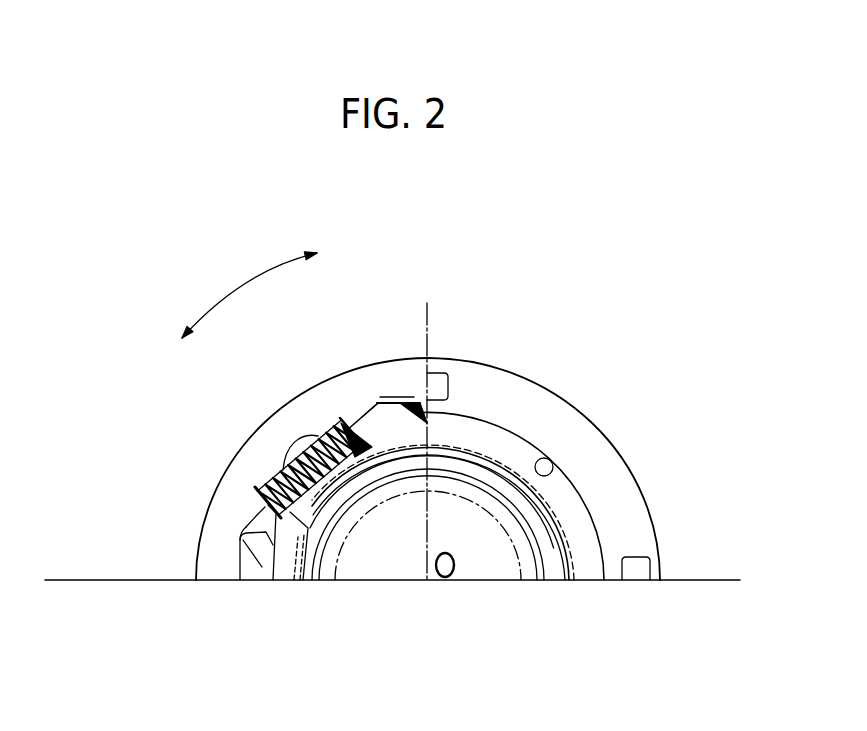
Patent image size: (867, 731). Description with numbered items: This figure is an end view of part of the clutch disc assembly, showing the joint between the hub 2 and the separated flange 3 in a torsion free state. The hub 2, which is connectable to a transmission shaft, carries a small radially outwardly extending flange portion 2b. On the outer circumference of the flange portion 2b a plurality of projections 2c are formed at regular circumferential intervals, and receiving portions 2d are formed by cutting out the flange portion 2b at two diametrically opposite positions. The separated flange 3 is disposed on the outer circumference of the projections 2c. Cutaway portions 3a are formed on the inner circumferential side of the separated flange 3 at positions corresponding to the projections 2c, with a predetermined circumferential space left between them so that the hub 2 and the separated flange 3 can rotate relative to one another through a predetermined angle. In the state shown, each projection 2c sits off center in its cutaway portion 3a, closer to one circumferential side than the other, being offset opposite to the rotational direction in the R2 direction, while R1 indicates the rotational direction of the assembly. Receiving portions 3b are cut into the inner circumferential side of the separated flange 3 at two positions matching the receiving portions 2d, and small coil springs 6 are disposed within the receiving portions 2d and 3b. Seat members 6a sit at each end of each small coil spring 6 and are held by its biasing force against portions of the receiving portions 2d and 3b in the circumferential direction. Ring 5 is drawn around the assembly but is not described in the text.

The hub 2 is at (472, 465).
The flange portion 2b is at (283, 543).
The projections 2c is at (240, 551).
The receiving portions 2d is at (319, 537).
The separated flange 3 is at (210, 570).
The cutaway portions 3a is at (416, 398).
The receiving portions 3b is at (287, 463).
The housing ring 5 is at (612, 508).
The small coil springs 6 is at (313, 443).
The seat members 6a is at (352, 427).
The rotational direction R1 is at (268, 287).
The R2 direction R2 is at (172, 352).